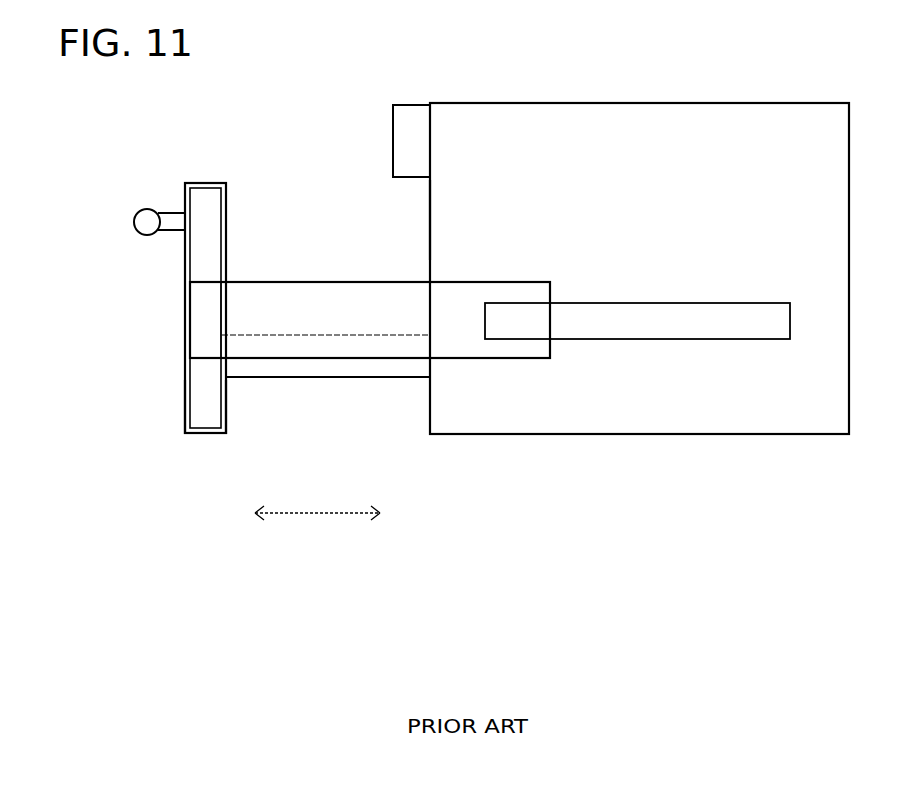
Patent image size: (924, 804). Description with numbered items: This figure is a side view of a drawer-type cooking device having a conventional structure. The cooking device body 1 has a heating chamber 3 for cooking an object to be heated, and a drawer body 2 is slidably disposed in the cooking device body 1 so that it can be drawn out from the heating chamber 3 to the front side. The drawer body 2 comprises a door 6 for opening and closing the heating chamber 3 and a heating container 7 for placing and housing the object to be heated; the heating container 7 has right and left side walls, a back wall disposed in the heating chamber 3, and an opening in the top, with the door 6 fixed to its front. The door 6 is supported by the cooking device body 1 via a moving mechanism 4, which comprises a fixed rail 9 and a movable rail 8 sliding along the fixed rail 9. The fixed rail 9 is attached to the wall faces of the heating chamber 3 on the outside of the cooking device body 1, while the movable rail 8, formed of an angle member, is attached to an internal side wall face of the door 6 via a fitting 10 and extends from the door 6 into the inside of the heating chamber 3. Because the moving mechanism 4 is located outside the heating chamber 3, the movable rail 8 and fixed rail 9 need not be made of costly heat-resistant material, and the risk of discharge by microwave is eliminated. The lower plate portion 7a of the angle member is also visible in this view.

The cooking device body 1 is at (836, 97).
The drawer body 2 is at (186, 178).
The heating chamber 3 is at (449, 222).
The moving mechanism 4 is at (383, 358).
The door 6 is at (185, 415).
The heating container 7 is at (333, 335).
The lower plate 7a is at (282, 378).
The movable rail 8 is at (285, 305).
The fixed rail 9 is at (589, 340).
The fitting 10 is at (197, 323).